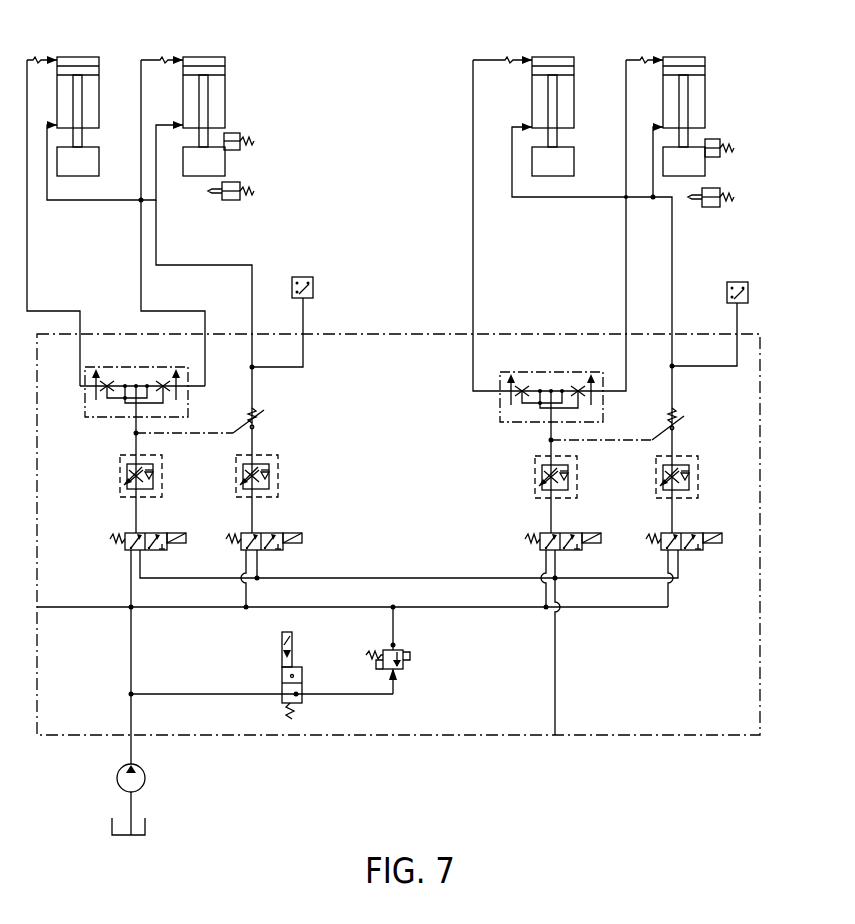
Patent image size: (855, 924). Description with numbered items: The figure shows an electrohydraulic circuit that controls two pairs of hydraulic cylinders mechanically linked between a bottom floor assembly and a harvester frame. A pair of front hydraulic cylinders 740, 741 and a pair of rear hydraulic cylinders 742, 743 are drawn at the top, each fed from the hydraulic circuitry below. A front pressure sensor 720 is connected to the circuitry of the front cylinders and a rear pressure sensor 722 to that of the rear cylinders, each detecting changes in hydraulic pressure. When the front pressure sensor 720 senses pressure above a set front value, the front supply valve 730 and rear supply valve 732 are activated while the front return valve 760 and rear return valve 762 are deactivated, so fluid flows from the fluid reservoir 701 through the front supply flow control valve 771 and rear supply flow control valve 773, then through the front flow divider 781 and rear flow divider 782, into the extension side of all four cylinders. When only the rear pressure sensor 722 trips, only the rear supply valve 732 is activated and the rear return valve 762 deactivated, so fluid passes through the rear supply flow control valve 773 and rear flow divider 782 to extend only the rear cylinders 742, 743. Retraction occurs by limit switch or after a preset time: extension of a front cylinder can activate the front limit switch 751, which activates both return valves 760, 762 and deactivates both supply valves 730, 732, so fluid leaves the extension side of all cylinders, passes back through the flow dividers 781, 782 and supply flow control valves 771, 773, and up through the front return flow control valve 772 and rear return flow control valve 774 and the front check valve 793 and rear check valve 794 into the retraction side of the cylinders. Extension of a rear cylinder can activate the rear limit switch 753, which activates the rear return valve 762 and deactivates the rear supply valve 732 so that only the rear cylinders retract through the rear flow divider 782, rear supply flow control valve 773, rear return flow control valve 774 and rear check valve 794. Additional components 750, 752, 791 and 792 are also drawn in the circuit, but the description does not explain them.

The fluid reservoir 701 is at (146, 828).
The front pressure sensor 720 is at (313, 283).
The rear pressure sensor 722 is at (748, 288).
The front supply valve 730 is at (122, 548).
The rear supply valve 732 is at (538, 548).
The front hydraulic cylinder 740 is at (78, 56).
The front hydraulic cylinder 741 is at (204, 56).
The rear hydraulic cylinder 742 is at (544, 56).
The rear hydraulic cylinder 743 is at (674, 56).
The position sensor / limit switch 750 is at (232, 136).
The front limit switch 751 is at (222, 202).
The position sensor / limit switch 752 is at (708, 140).
The rear limit switch 753 is at (705, 208).
The front return valve 760 is at (284, 535).
The rear return valve 762 is at (704, 535).
The front supply flow control valve 771 is at (119, 472).
The front return flow control valve 772 is at (280, 470).
The rear supply flow control valve 773 is at (534, 472).
The rear return flow control valve 774 is at (698, 470).
The front flow divider 781 is at (98, 402).
The rear flow divider 782 is at (512, 406).
The pressure compensated valve 791 is at (294, 704).
The pressure relief valve 792 is at (398, 672).
The front check valve 793 is at (262, 420).
The rear check valve 794 is at (682, 420).